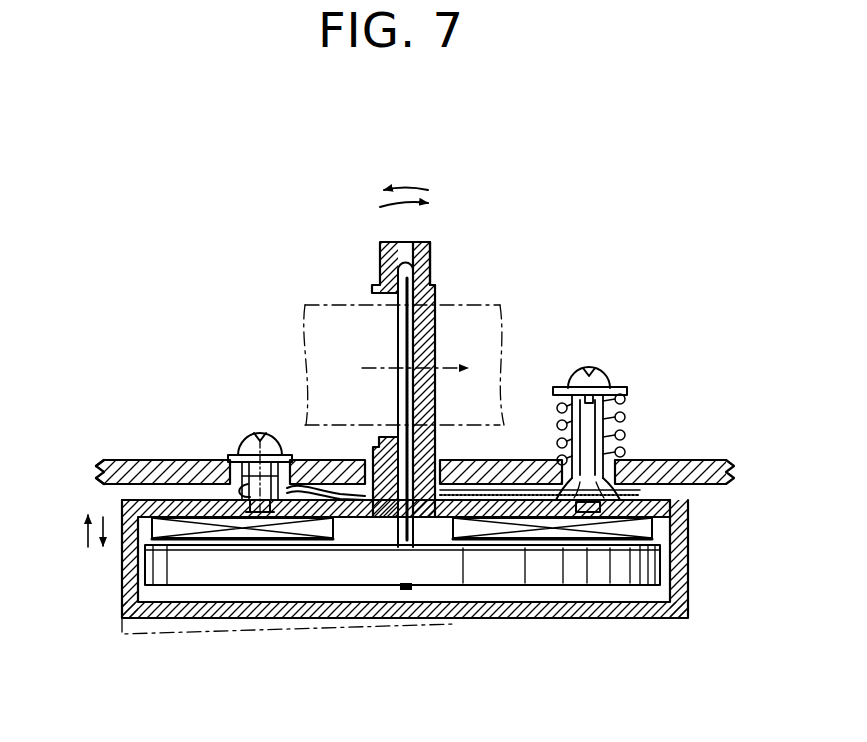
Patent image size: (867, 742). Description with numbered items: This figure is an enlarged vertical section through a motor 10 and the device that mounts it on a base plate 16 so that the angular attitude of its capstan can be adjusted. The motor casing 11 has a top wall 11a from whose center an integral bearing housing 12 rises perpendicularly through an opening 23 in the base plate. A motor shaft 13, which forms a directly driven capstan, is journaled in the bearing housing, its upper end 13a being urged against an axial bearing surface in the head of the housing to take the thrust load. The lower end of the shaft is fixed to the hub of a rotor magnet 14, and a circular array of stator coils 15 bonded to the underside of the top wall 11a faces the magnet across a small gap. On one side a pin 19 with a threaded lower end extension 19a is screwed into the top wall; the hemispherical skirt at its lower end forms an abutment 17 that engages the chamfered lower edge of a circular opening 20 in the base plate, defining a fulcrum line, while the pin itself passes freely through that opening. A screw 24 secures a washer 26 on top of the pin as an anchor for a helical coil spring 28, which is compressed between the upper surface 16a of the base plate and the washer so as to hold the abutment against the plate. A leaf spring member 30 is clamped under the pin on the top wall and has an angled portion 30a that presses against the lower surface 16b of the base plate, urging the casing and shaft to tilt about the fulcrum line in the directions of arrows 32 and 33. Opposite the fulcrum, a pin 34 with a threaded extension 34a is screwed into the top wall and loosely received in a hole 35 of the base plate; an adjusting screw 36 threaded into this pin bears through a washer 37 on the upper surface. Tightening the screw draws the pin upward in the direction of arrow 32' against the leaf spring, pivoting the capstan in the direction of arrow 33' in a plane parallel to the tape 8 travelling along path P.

The tape 8 is at (505, 360).
The path of the driven tape P is at (446, 366).
The motor 10 is at (227, 649).
The motor casing 11 is at (692, 568).
The top wall of casing 11a is at (163, 500).
The bearing housing 12 is at (434, 288).
The motor shaft 13 is at (398, 330).
The upper end of shaft 13a is at (404, 262).
The rotor magnet 14 is at (369, 568).
The stator coils 15 is at (152, 524).
The base plate 16 is at (713, 458).
The upper surface of base plate 16a is at (110, 458).
The lower surface of base plate 16b is at (110, 492).
The abutment 17 is at (618, 488).
The pin 19 is at (580, 420).
The threaded lower end extension 19a is at (583, 503).
The circular opening 20 is at (611, 477).
The opening 23 is at (440, 463).
The screw 24 is at (593, 368).
The washer 26 is at (617, 389).
The helical coil spring 28 is at (625, 418).
The leaf spring member 30 is at (513, 500).
The angled portion 30a is at (311, 473).
The arrow 32 is at (76, 518).
The arrow 32' is at (68, 545).
The arrow 33 is at (423, 165).
The arrow 33' is at (381, 220).
The pin 34 is at (240, 487).
The threaded extension 34a is at (263, 512).
The hole 35 is at (281, 455).
The adjusting screw 36 is at (262, 432).
The washer 37 is at (232, 453).